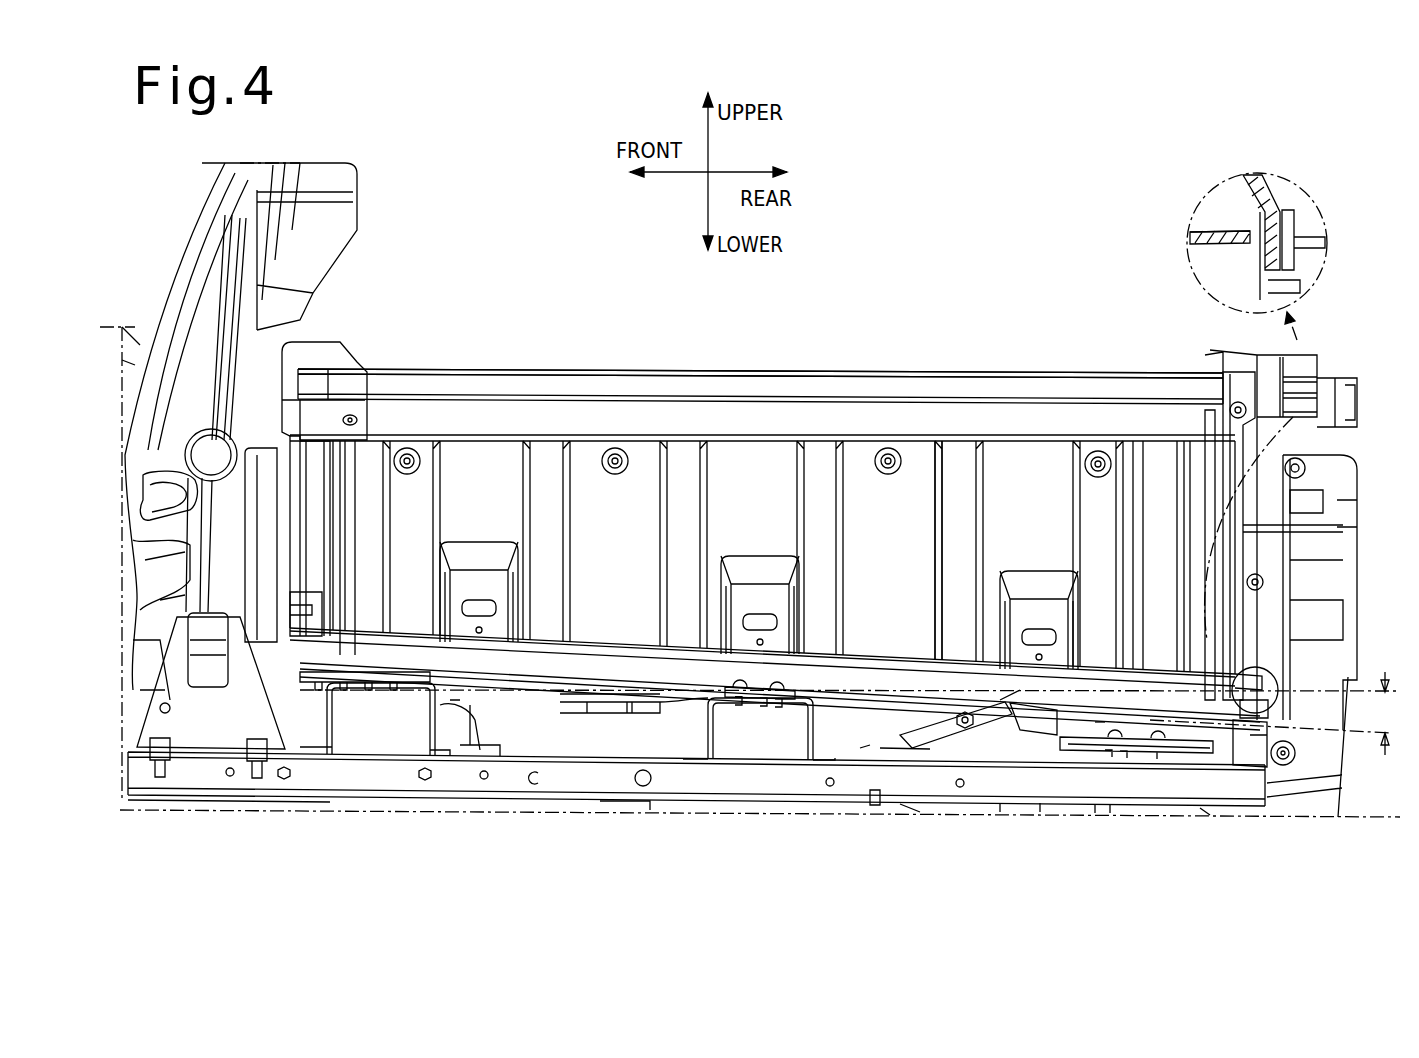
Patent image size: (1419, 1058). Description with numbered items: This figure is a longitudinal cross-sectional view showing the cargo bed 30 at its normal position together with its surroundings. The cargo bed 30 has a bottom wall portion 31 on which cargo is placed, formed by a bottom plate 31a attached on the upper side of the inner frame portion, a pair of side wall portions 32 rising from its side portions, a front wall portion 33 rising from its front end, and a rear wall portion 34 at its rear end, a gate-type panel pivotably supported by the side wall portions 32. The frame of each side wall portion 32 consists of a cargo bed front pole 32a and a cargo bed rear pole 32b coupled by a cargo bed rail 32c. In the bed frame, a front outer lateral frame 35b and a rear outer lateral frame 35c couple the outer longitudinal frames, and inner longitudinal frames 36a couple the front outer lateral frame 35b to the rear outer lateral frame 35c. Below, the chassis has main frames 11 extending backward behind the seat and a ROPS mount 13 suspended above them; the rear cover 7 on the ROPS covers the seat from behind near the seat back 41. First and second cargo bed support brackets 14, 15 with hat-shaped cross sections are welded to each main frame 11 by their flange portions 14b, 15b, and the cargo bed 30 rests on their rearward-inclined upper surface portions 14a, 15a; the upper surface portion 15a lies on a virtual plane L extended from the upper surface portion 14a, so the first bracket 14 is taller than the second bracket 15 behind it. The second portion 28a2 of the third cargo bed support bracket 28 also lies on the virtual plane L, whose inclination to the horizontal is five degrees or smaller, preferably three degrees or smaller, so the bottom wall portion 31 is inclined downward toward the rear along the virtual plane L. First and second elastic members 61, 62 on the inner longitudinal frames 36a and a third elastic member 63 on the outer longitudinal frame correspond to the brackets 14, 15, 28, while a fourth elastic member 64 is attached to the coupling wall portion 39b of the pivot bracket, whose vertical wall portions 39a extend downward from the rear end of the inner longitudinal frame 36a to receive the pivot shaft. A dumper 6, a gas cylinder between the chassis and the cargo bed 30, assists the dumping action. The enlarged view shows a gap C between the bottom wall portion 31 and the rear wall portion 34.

The rear cover 7 is at (355, 217).
The seat back 41 is at (168, 278).
The rear wall portion 34 is at (1246, 600).
The gap C is at (1226, 218).
The cargo bed 30 is at (770, 348).
The side wall portions 32 is at (685, 470).
The cargo bed front poles 32a is at (328, 462).
The cargo bed rear poles 32b is at (1240, 392).
The cargo bed rails 32c is at (900, 372).
The bottom wall portion 31 is at (590, 655).
The bottom plate 31a is at (855, 655).
The front wall portion 33 is at (313, 512).
The first elastic member 61 is at (383, 660).
The second elastic member 62 is at (765, 690).
The third elastic member 63 is at (330, 665).
The front outer lateral frame 35b is at (290, 600).
The inner longitudinal frames 36a is at (1100, 690).
The ROPS mount 13 is at (200, 686).
The third cargo bed support bracket 28 is at (305, 706).
The second portion 28a2 is at (350, 690).
The first cargo bed support bracket 14 is at (360, 690).
The upper surface portion 14a is at (380, 697).
The flange portion 14b is at (467, 730).
The main frames 11 is at (555, 778).
The second cargo bed support bracket 15 is at (754, 722).
The upper surface portion 15a is at (726, 700).
The flange portion 15b is at (840, 740).
The dumper 6 is at (915, 745).
The vertical wall portions 39a is at (1020, 712).
The coupling wall portion 39b is at (1085, 745).
The virtual plane L is at (1100, 720).
The fourth elastic member 64 is at (1125, 750).
The rear outer lateral frame 35c is at (1243, 795).